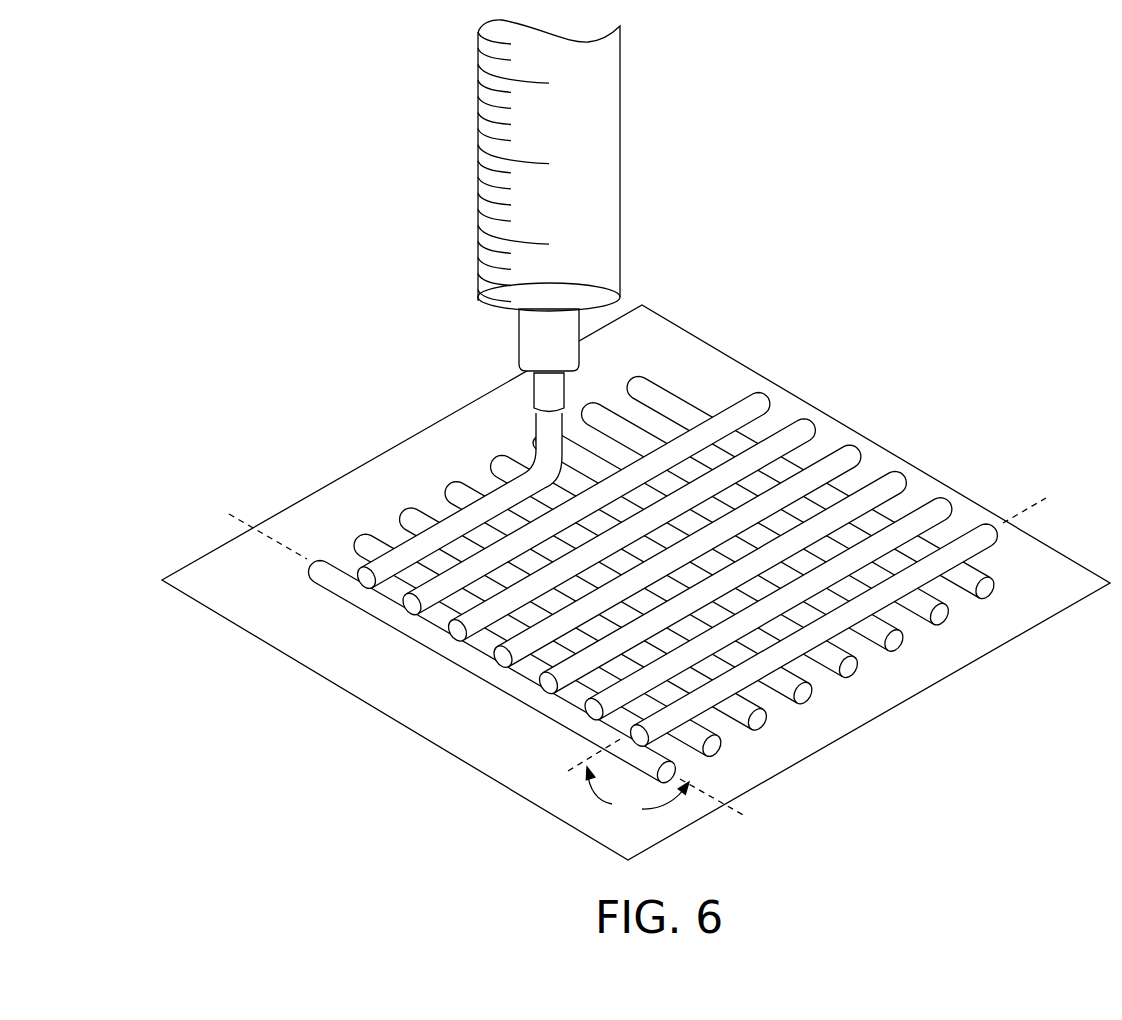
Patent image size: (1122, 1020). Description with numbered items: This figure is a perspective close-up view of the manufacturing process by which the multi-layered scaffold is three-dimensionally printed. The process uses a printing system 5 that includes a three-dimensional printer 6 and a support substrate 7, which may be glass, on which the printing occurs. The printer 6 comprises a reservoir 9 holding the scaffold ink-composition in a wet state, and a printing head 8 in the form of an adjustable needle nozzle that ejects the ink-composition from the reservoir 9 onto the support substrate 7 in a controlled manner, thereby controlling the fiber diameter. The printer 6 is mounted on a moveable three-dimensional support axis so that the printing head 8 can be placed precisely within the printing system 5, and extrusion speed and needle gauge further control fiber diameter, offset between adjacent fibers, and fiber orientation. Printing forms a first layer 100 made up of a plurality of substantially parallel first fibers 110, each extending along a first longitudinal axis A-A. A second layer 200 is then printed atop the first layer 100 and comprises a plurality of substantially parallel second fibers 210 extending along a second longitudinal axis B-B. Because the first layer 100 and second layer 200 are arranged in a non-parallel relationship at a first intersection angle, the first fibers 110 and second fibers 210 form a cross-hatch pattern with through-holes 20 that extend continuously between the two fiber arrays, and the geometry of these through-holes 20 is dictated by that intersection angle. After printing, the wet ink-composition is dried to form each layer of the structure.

The printing system 5 is at (1006, 195).
The 3D-printer 6 is at (564, 216).
The support substrate 7 is at (955, 487).
The printing head 8 is at (543, 343).
The reservoir 9 is at (481, 173).
The through-holes 20 is at (640, 535).
The first layer 100 is at (306, 576).
The first fibers 110 is at (427, 630).
The second layer 200 is at (708, 697).
The second fibers 210 is at (787, 640).